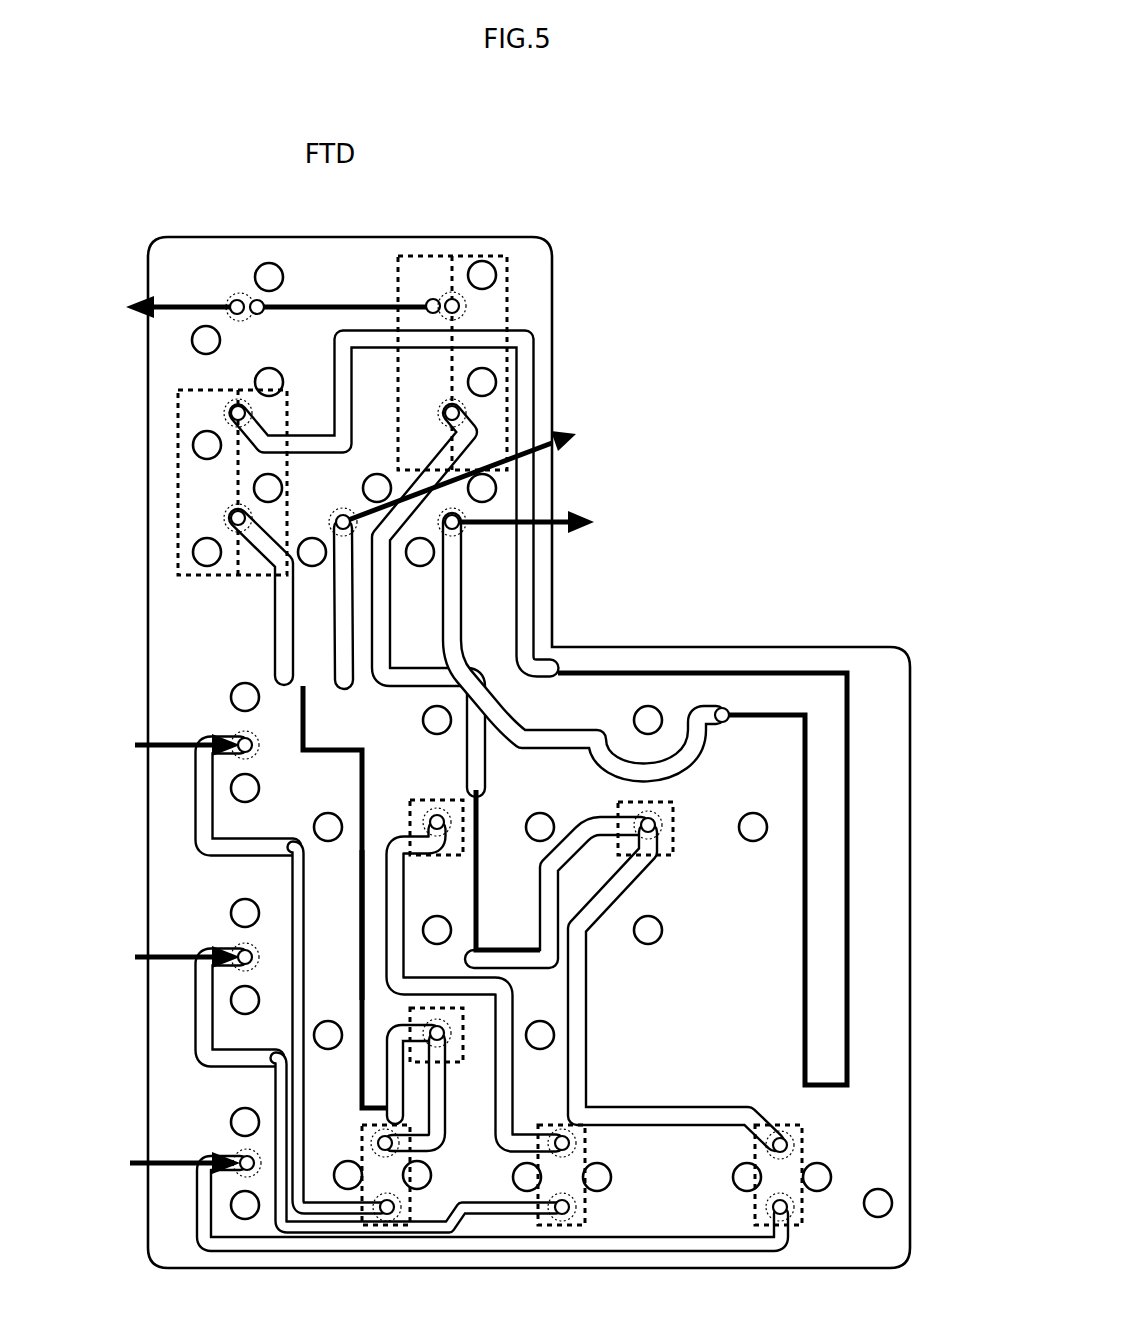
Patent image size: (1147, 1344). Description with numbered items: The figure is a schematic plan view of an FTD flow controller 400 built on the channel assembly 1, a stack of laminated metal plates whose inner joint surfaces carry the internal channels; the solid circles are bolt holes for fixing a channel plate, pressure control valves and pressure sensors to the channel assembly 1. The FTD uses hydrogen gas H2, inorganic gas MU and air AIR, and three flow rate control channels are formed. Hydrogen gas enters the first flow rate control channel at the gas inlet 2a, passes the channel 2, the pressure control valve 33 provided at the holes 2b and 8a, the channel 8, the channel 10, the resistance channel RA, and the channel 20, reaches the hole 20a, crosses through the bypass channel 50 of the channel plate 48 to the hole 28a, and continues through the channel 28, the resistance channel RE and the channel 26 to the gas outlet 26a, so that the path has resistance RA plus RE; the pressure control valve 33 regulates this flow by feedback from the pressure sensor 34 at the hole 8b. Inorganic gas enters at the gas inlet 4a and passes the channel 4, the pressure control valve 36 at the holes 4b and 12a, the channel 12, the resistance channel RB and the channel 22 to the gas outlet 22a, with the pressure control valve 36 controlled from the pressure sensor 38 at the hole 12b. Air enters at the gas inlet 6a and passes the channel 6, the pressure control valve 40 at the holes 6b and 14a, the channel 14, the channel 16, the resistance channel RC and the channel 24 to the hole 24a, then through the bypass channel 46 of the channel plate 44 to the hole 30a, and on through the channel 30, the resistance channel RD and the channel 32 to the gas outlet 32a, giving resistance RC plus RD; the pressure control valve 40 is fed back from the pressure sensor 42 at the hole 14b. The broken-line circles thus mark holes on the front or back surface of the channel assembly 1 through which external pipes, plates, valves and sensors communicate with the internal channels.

The channel assembly 1 is at (806, 646).
The FTD flow controller 400 is at (757, 321).
The channel 2 is at (203, 822).
The gas inlet 2a is at (243, 742).
The hole 2b is at (383, 1215).
The channel 4 is at (203, 1022).
The gas inlet 4a is at (243, 953).
The hole 4b is at (572, 1215).
The channel 6 is at (203, 1208).
The gas inlet 6a is at (245, 1158).
The hole 6b is at (772, 1215).
The channel 8 is at (440, 1100).
The hole 8a is at (380, 1152).
The hole 8b is at (447, 1040).
The channel 10 is at (400, 1105).
The channel 12 is at (507, 1090).
The hole 12a is at (572, 1150).
The hole 12b is at (447, 828).
The channel 14 is at (578, 1040).
The hole 14a is at (786, 1153).
The hole 14b is at (658, 822).
The channel 16 is at (700, 738).
The channel 20 is at (282, 640).
The hole 20a is at (236, 518).
The channel 22 is at (342, 606).
The gas outlet 22a is at (340, 518).
The channel 24 is at (396, 632).
The hole 24a is at (456, 412).
The channel 26 is at (455, 566).
The gas outlet 26a is at (456, 519).
The channel 28 is at (528, 372).
The hole 28a is at (236, 410).
The channel 30 is at (434, 299).
The hole 30a is at (455, 299).
The channel 32 is at (257, 300).
The gas outlet 32a is at (236, 300).
The pressure control valve 33 is at (300, 1205).
The pressure sensor 34 is at (410, 1022).
The pressure control valve 36 is at (562, 1226).
The pressure sensor 38 is at (478, 790).
The pressure control valve 40 is at (804, 1142).
The pressure sensor 42 is at (676, 846).
The channel plate 44 is at (508, 268).
The bypass channel 46 is at (455, 340).
The channel plate 48 is at (178, 404).
The bypass channel 50 is at (193, 445).
The resistance channel RA is at (361, 895).
The resistance channel RB is at (302, 722).
The resistance channel RC is at (478, 876).
The resistance channel RD is at (343, 304).
The resistance channel RE is at (850, 842).
The air AIR is at (154, 735).
The hydrogen gas H2 is at (361, 633).
The inorganic gas MU is at (347, 696).